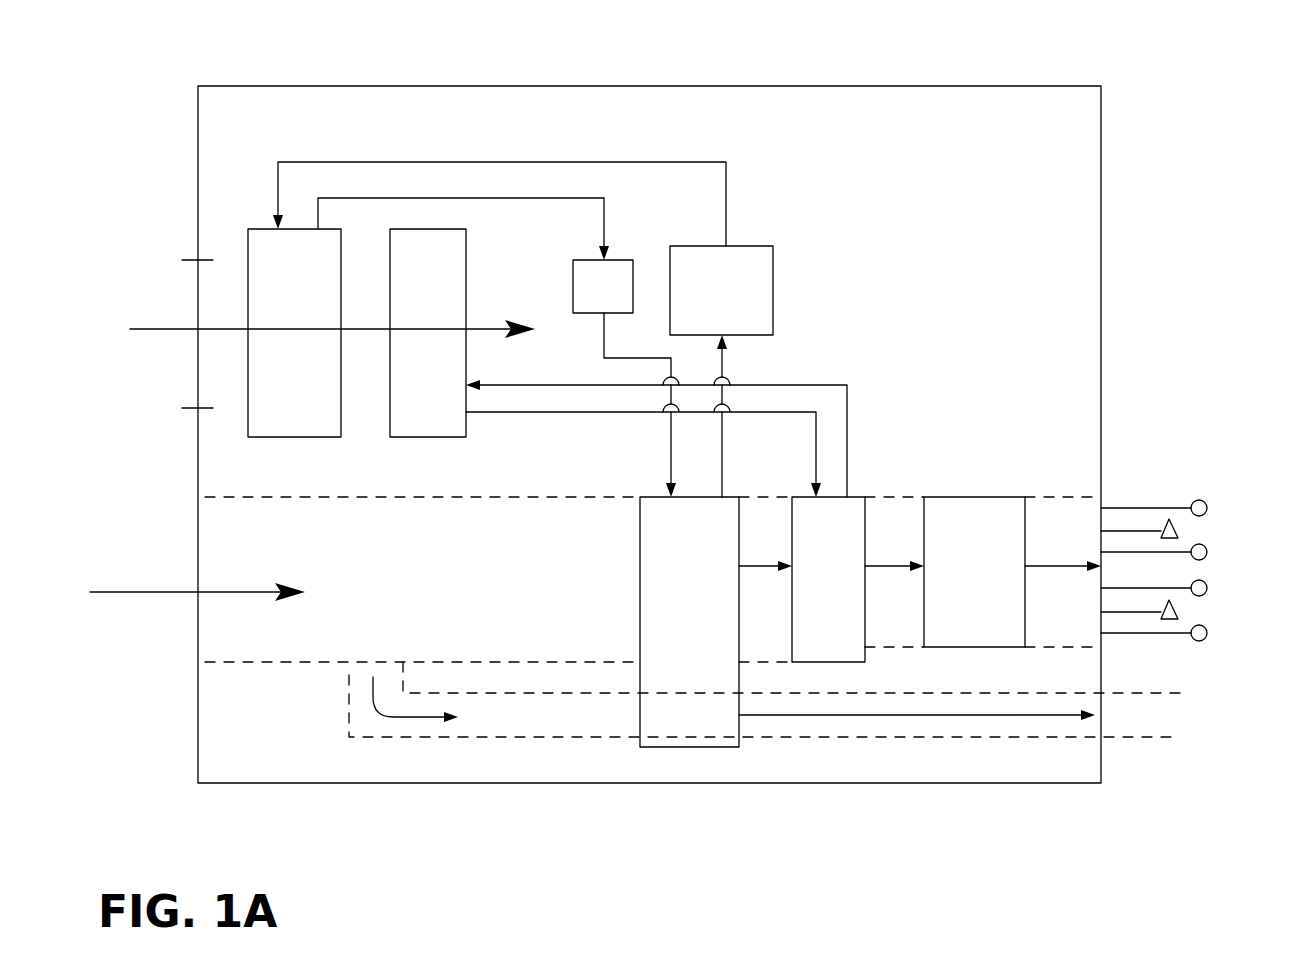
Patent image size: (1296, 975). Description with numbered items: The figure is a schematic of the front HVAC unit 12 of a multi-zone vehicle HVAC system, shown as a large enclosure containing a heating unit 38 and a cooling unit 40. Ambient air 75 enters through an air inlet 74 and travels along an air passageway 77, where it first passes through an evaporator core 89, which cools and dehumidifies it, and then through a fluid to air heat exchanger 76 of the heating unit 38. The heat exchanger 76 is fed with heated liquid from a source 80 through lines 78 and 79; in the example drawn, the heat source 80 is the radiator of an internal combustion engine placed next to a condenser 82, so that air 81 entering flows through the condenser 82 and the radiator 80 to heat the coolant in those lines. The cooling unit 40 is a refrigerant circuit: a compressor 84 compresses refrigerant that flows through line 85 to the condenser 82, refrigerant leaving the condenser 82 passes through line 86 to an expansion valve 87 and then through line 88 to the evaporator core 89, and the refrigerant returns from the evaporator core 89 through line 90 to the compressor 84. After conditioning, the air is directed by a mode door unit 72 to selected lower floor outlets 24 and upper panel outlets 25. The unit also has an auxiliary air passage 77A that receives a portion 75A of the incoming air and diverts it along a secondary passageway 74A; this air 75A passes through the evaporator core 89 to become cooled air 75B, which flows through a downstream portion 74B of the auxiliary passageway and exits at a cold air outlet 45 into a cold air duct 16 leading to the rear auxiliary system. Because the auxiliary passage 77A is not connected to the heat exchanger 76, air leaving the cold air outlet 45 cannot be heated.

The front HVAC unit 12 is at (780, 78).
The cold air duct 16 is at (1147, 737).
The lower (floor) outlets 24 is at (1178, 531).
The upper (panel) outlets 25 is at (1207, 505).
The heating unit 38 is at (478, 306).
The cooling unit 40 is at (782, 303).
The cold air outlet 45 is at (1100, 715).
The mode door unit 72 is at (953, 484).
The air inlet 74 is at (228, 628).
The secondary passageway 74A is at (557, 737).
The downstream portion of the auxiliary air passageway 74B is at (1002, 737).
The ambient air 75 is at (155, 585).
The portion of incoming air 75A is at (410, 718).
The cooled air 75B is at (873, 715).
The fluid to air heat exchanger 76 is at (875, 530).
The air passageway 77 is at (456, 590).
The auxiliary air passage 77A is at (510, 730).
The line 78 is at (585, 412).
The line 79 is at (512, 385).
The source of heated liquid 80 is at (466, 268).
The air 81 is at (170, 328).
The condenser 82 is at (248, 247).
The compressor 84 is at (773, 265).
The line 85 is at (503, 162).
The line 86 is at (197, 380).
The expansion valve 87 is at (633, 280).
The line 88 is at (670, 445).
The evaporator core 89 is at (630, 569).
The line 90 is at (723, 462).